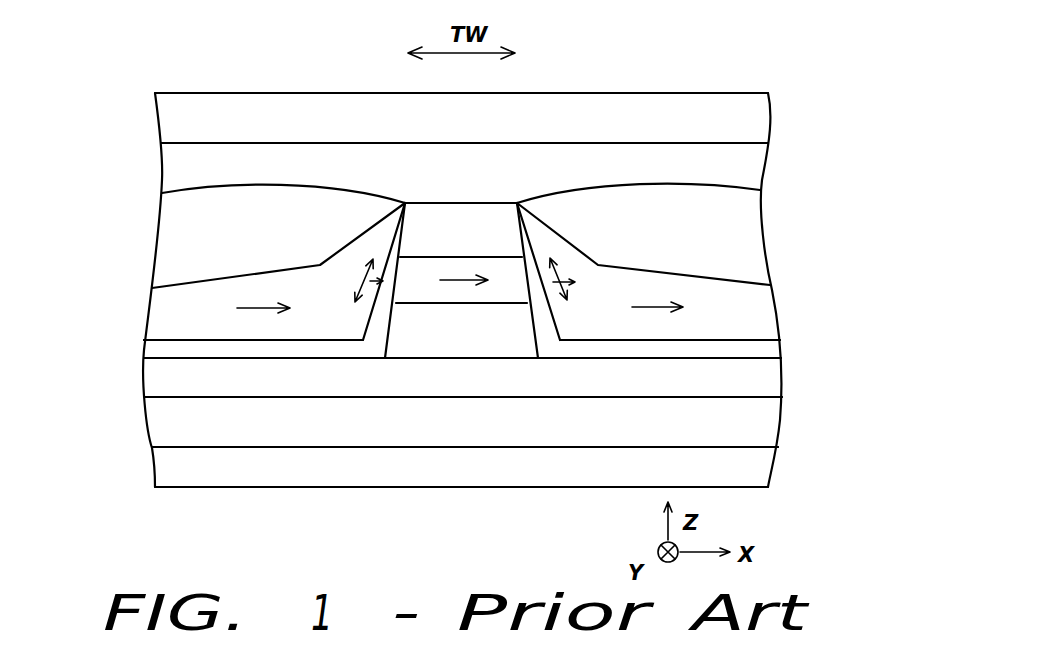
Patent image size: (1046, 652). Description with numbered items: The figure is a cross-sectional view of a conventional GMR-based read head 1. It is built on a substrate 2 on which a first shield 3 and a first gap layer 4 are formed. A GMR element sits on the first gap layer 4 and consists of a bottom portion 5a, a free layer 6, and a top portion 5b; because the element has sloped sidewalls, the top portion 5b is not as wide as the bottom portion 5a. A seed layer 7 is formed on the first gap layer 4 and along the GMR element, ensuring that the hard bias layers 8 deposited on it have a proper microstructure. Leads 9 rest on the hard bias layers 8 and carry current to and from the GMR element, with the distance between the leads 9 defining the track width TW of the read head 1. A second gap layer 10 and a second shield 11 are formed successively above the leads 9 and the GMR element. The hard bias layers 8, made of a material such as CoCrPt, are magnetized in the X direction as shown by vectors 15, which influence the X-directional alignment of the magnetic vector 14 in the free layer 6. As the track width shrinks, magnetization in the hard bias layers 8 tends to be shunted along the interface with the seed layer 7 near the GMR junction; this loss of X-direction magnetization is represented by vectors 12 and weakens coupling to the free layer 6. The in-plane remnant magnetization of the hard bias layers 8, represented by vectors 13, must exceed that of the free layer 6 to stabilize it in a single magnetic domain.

The read head 1 is at (140, 74).
The substrate 2 is at (762, 464).
The first shield 3 is at (766, 415).
The first gap layer 4 is at (770, 380).
The bottom portion 5a is at (418, 342).
The top portion 5b is at (483, 230).
The free layer 6 is at (510, 280).
The seed layer 7 is at (162, 347).
The hard bias layers 8 is at (162, 305).
The leads 9 is at (168, 232).
The second gap layer 10 is at (757, 157).
The second shield 11 is at (758, 113).
The vectors 12 is at (357, 299).
The vectors 13 is at (376, 281).
The magnetic vector 14 is at (472, 280).
The vectors 15 is at (257, 307).